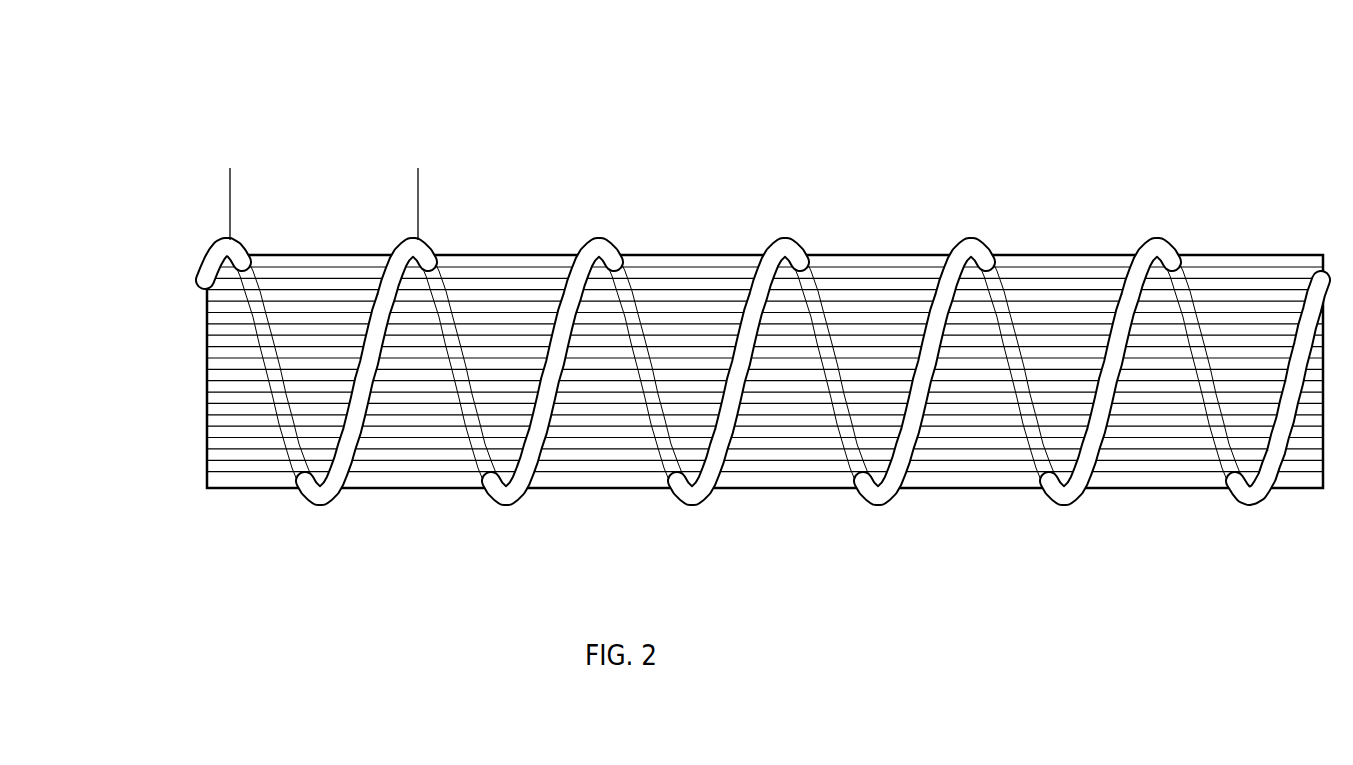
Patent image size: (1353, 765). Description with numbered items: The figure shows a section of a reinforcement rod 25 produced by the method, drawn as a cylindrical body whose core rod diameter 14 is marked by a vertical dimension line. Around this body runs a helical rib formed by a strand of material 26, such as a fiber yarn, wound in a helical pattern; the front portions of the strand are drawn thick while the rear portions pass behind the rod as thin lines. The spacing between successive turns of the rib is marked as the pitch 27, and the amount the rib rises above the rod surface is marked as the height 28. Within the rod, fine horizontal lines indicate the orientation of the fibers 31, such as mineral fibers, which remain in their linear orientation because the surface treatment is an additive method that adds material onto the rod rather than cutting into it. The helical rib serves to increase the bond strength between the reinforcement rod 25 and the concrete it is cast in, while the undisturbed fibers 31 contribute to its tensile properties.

The core rod diameter 14 is at (124, 165).
The reinforcement rod 25 is at (1062, 347).
The strand of material 26 is at (775, 260).
The pitch 27 is at (505, 214).
The height 28 is at (624, 350).
The fibers 31 is at (870, 323).